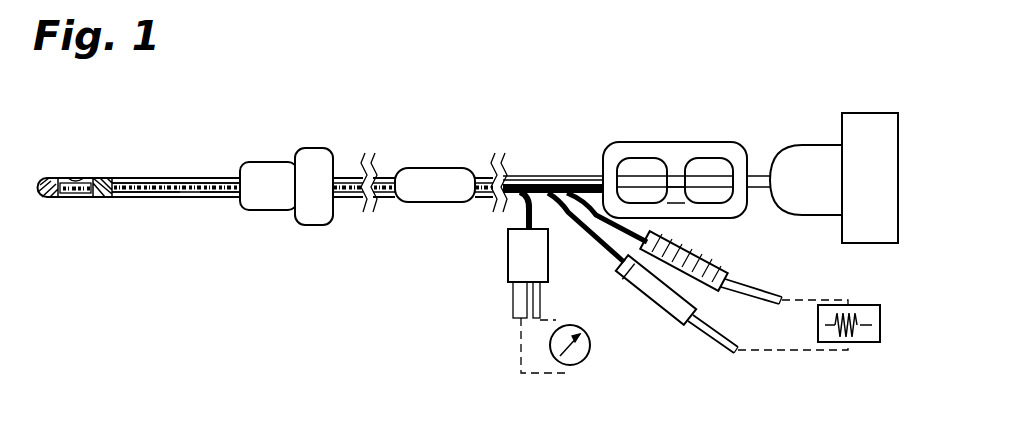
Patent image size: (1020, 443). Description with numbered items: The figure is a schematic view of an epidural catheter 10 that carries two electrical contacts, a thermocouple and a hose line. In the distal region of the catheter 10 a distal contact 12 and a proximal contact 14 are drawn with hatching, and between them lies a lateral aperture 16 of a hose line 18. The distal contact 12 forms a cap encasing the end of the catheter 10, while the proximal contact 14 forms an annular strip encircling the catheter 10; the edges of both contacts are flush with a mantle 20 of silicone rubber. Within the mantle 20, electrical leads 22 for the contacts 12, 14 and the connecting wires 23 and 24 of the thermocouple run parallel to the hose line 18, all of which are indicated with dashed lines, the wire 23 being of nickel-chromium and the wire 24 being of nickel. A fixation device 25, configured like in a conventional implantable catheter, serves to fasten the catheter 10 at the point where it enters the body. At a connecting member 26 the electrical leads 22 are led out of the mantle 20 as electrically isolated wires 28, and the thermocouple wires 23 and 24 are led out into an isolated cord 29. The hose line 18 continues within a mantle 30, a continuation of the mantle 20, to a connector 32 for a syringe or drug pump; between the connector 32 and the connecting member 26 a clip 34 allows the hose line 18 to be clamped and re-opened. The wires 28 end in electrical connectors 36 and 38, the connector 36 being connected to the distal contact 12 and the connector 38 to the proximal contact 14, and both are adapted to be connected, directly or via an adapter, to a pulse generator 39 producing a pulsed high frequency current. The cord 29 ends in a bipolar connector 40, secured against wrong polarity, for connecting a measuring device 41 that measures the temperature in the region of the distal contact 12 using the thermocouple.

The epidural catheter 10 is at (252, 133).
The distal contact 12 is at (48, 197).
The proximal contact 14 is at (103, 197).
The lateral aperture 16 is at (77, 178).
The hose line 18 is at (218, 196).
The mantle 20 is at (70, 197).
The electrical leads 22 is at (152, 196).
The connecting wire 23 is at (128, 182).
The connecting wire 24 is at (172, 182).
The fixation device 25 is at (285, 206).
The connecting member 26 is at (420, 198).
The electrically isolated wires 28 is at (592, 190).
The isolated cord 29 is at (520, 206).
The mantle 30 is at (527, 183).
The connector 32 is at (832, 210).
The clip 34 is at (712, 153).
The electrical connector 36 is at (722, 275).
The electrical connector 38 is at (678, 307).
The pulse generator 39 is at (850, 305).
The bipolar connector 40 is at (543, 247).
The measuring device 41 is at (590, 345).